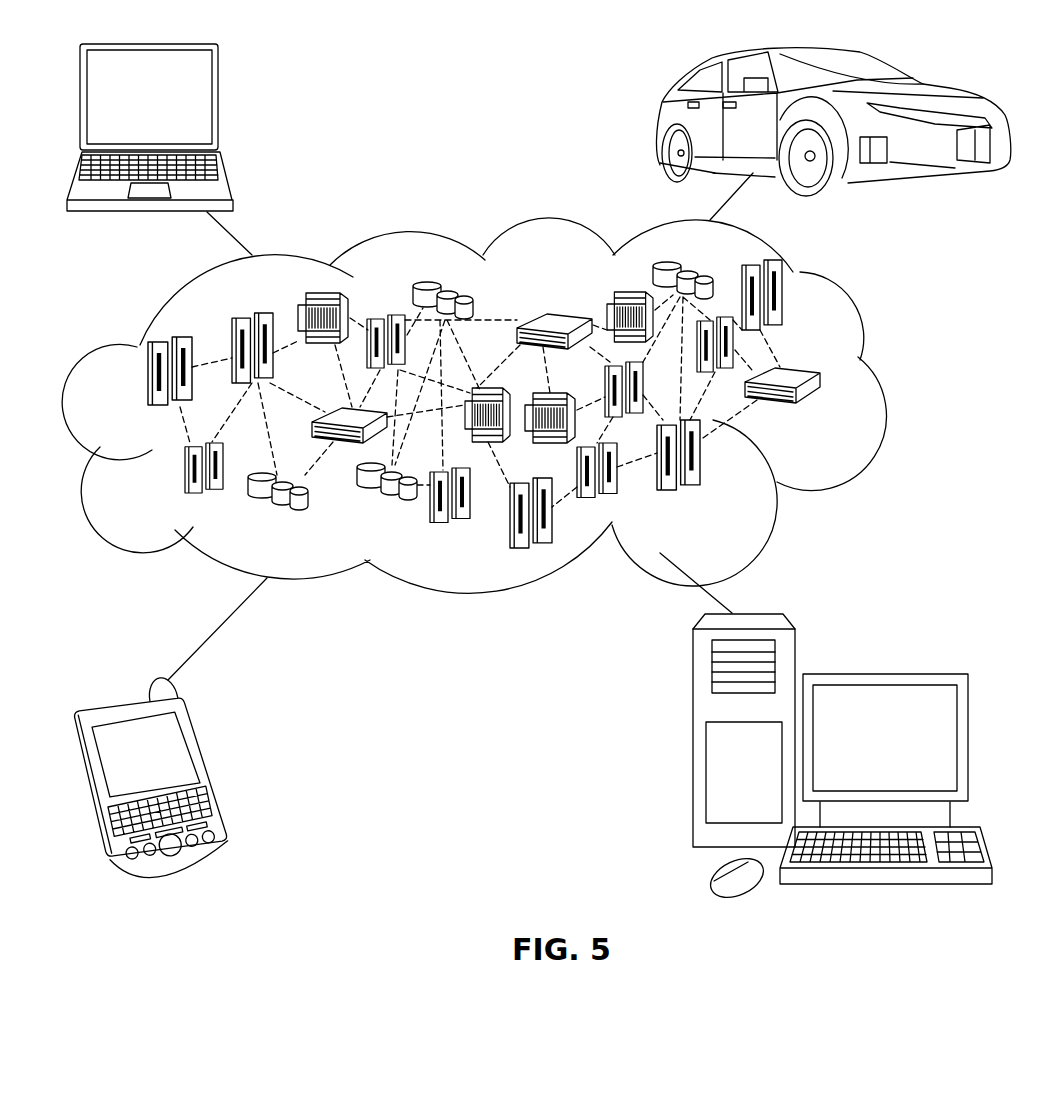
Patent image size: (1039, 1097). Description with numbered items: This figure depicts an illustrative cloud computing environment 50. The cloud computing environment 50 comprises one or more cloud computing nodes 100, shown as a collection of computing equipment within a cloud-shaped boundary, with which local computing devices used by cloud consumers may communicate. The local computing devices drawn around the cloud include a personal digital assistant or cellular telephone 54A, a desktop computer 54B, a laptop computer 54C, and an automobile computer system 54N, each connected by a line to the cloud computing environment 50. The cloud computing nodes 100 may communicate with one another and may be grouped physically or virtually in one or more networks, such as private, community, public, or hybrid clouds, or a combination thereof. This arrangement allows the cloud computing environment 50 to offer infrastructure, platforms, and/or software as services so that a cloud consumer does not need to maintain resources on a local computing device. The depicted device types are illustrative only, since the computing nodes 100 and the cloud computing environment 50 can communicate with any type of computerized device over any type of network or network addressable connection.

The cloud computing environment 50 is at (504, 405).
The personal digital assistant (PDA) or cellular telephone 54A is at (212, 768).
The desktop computer 54B is at (882, 672).
The laptop computer 54C is at (220, 105).
The automobile computer system 54N is at (660, 122).
The cloud computing nodes 100 is at (823, 412).